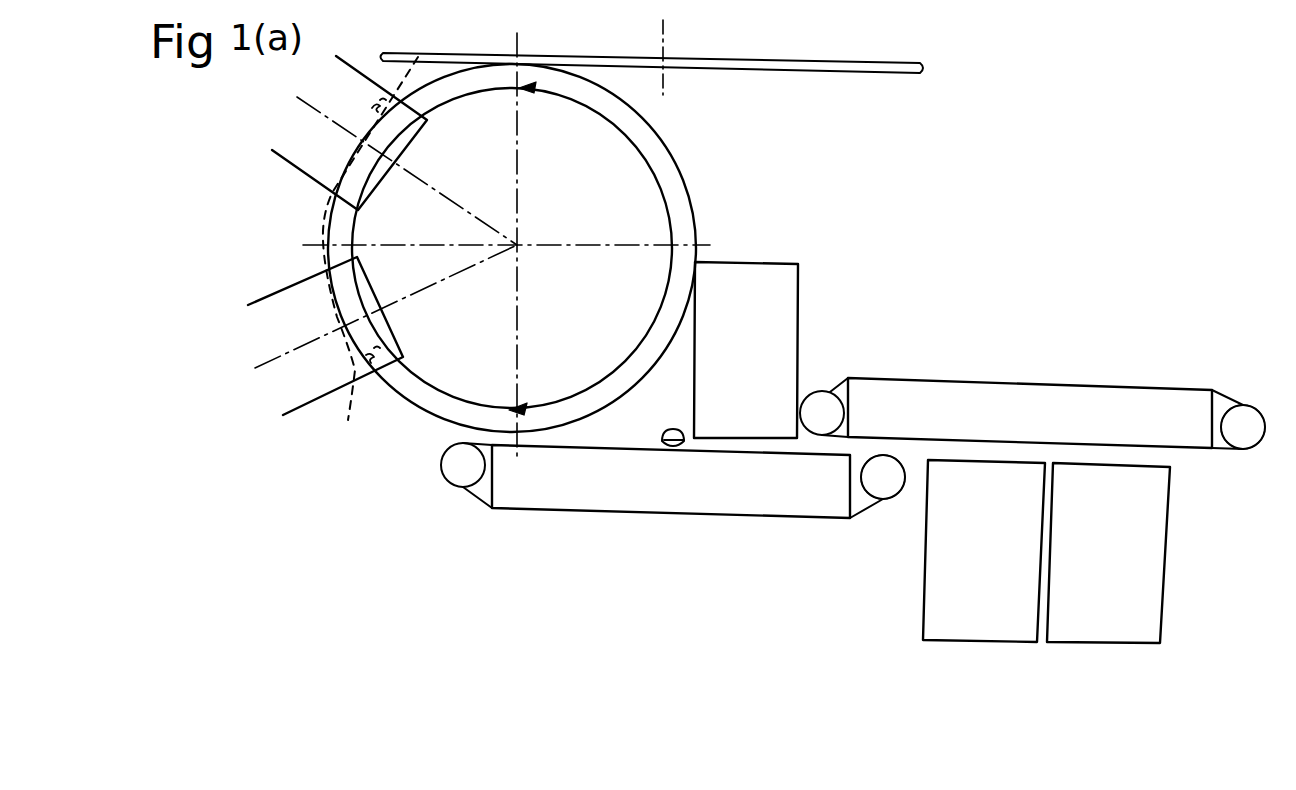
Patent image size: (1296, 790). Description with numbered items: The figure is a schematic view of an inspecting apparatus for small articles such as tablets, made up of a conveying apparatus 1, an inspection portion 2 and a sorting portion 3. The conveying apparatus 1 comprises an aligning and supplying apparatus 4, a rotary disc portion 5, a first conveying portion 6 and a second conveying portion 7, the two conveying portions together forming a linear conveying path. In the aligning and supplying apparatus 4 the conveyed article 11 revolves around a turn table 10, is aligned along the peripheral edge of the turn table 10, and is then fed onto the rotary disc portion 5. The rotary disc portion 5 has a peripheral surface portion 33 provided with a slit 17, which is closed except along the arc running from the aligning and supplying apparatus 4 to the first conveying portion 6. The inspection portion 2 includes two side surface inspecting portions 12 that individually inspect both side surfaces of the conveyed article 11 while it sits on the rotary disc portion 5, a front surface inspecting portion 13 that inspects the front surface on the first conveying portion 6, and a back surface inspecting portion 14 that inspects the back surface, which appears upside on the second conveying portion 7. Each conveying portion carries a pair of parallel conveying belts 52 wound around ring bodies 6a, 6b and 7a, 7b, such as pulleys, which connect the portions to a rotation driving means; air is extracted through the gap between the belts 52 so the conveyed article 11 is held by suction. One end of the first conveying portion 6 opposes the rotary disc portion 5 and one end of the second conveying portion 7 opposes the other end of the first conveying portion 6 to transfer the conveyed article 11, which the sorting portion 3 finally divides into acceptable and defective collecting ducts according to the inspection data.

The conveying apparatus 1 is at (823, 183).
The inspection portion 2 is at (268, 140).
The sorting portion 3 is at (1148, 596).
The aligning and supplying apparatus 4 is at (652, 49).
The rotary disc portion 5 is at (551, 248).
The first conveying portion 6 is at (649, 505).
The ring body 6a is at (445, 466).
The ring body 6b is at (883, 490).
The second conveying portion 7 is at (1032, 374).
The ring body 7a is at (823, 412).
The ring body 7b is at (1233, 423).
The turn table 10 is at (748, 60).
The conveyed article 11 is at (673, 428).
The side surface inspecting portion 12 is at (313, 158).
The front surface inspecting portion 13 is at (757, 273).
The back surface inspecting portion 14 is at (943, 595).
The slit 17 is at (693, 202).
The peripheral surface portion 33 is at (658, 193).
The conveying belt 52 is at (858, 458).